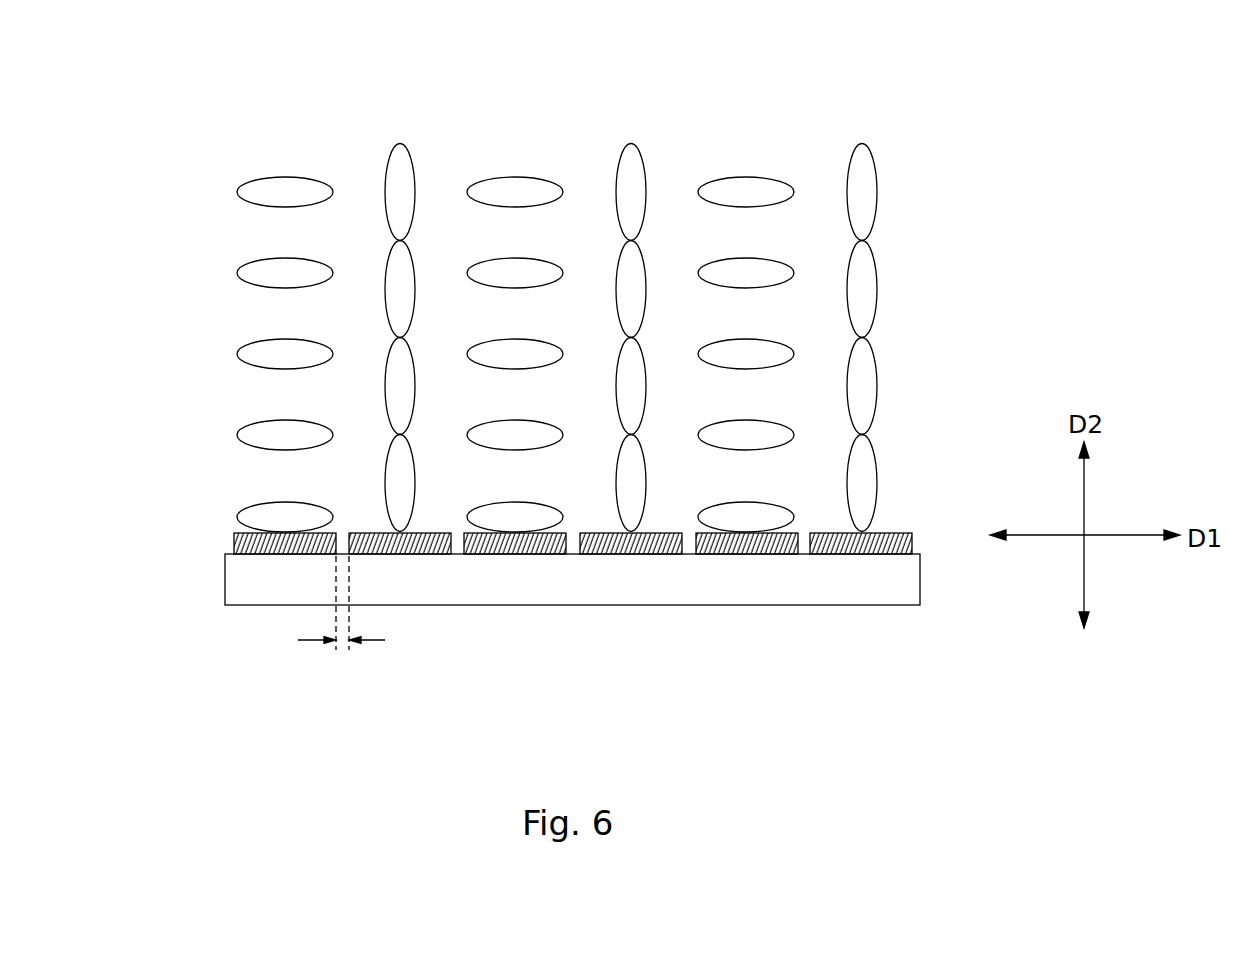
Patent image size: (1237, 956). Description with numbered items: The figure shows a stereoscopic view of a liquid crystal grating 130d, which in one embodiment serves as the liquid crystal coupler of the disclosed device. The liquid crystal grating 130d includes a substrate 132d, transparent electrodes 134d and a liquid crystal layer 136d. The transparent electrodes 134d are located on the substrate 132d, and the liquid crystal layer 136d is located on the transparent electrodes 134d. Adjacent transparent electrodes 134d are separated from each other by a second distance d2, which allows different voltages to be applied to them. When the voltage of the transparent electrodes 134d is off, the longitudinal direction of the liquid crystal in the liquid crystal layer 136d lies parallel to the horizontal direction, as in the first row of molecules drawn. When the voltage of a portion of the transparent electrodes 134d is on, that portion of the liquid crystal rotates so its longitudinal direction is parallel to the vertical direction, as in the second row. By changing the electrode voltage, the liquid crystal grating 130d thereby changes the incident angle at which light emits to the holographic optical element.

The liquid crystal grating 130d is at (1113, 53).
The substrate 132d is at (250, 585).
The transparent electrodes 134d is at (236, 540).
The liquid crystal layer 136d is at (222, 163).
The second distance d2 is at (341, 619).